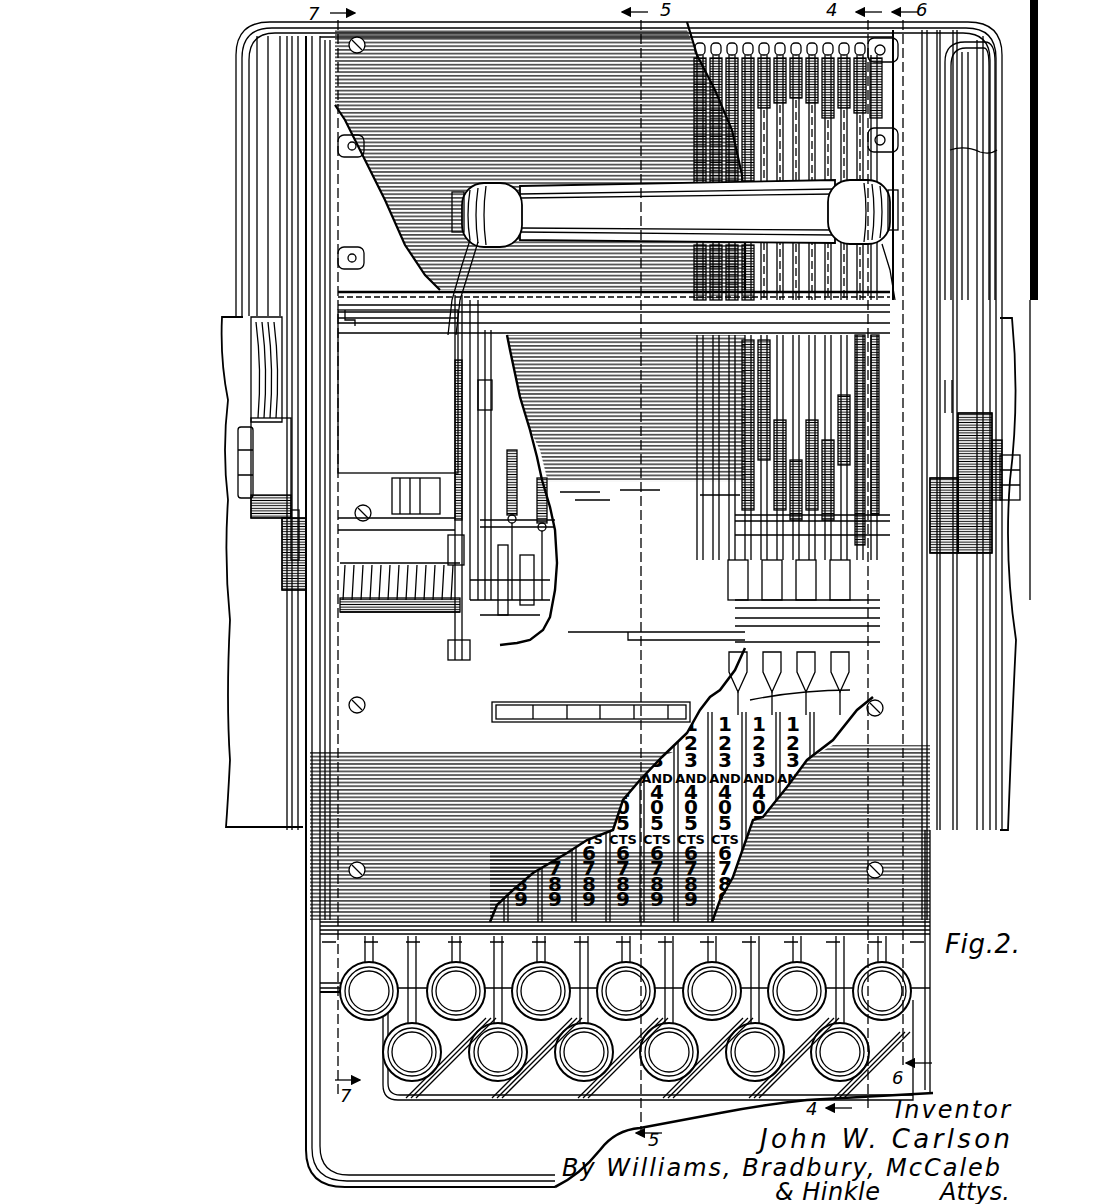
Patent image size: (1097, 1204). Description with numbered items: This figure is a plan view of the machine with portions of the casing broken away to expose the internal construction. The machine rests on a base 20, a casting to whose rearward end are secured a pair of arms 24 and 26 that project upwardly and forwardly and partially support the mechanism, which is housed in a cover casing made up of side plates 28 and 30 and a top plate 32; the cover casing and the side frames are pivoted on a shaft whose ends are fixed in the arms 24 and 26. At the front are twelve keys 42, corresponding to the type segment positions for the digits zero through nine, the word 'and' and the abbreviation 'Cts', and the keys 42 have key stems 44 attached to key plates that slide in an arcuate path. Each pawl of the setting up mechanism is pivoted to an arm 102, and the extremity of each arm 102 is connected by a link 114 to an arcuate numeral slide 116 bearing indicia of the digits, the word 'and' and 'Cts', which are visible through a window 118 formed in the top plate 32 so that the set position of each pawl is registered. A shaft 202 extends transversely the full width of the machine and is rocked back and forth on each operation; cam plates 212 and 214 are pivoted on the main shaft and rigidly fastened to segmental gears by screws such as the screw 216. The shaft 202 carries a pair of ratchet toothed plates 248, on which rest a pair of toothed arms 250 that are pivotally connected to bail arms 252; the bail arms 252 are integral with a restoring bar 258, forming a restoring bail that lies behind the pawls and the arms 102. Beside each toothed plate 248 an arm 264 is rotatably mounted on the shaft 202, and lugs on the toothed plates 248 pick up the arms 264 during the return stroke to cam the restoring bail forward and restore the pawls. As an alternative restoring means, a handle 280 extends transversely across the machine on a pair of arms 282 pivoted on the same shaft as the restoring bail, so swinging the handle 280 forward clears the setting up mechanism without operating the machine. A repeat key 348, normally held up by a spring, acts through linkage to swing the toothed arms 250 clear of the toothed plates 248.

The base 20 is at (335, 1135).
The arm 24 is at (968, 120).
The arm 26 is at (270, 355).
The side plate 28 is at (920, 750).
The side plate 30 is at (322, 729).
The top plate 32 is at (360, 678).
The keys 42 is at (400, 1052).
The key stems 44 is at (525, 944).
The arm 102 is at (735, 570).
The link 114 is at (860, 612).
The arcuate numeral slide 116 is at (855, 692).
The window 118 is at (525, 712).
The shaft 202 is at (533, 585).
The cam plate 212 is at (935, 362).
The cam plate 214 is at (300, 512).
The screw 216 is at (400, 572).
The ratchet toothed plate 248 is at (495, 552).
The toothed arm 250 is at (470, 450).
The bail arm 252 is at (850, 462).
The restoring bar 258 is at (802, 300).
The arm 264 is at (448, 550).
The handle 280 is at (641, 257).
The arm 282 is at (460, 352).
The repeat key 348 is at (912, 994).